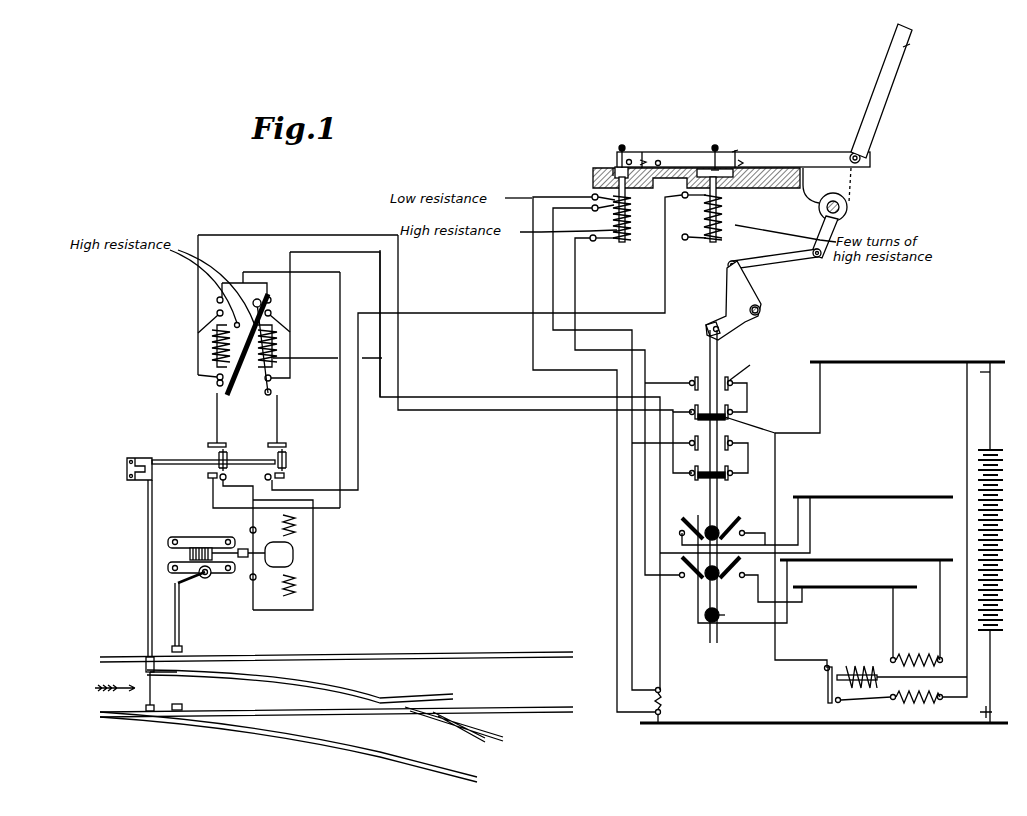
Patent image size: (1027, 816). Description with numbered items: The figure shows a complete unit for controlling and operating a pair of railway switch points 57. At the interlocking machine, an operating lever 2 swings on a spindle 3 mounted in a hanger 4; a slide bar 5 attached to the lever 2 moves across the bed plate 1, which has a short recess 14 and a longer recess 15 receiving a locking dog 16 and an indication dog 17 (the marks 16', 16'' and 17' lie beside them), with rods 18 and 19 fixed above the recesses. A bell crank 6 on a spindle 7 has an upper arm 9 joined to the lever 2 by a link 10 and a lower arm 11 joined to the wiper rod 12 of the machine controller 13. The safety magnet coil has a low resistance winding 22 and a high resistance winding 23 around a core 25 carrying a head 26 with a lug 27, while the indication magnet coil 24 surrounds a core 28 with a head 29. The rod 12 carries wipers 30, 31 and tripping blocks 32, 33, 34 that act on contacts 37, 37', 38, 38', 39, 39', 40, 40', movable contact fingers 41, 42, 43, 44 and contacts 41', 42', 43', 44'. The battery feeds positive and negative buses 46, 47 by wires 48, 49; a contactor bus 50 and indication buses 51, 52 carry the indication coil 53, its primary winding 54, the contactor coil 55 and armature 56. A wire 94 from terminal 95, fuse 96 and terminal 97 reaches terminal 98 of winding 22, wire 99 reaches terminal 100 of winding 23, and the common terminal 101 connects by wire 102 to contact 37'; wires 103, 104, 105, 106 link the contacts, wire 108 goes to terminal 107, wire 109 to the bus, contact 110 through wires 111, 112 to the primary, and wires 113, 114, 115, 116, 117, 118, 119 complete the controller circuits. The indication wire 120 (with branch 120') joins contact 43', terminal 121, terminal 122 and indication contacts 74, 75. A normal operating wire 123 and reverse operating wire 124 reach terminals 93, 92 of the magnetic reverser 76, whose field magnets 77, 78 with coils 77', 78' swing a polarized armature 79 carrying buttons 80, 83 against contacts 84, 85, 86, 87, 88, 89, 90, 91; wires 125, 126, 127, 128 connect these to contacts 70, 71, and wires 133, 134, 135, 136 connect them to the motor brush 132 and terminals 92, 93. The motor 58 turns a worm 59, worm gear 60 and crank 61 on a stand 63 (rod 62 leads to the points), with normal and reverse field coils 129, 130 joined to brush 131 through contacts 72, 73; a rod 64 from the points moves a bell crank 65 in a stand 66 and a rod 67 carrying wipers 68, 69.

The bed plate 1 is at (745, 172).
The operating lever 2 is at (886, 110).
The spindle 3 is at (848, 207).
The hanger 4 is at (806, 176).
The slide bar 5 is at (806, 150).
The bell crank 6 is at (760, 305).
The spindle 7 is at (762, 310).
The upper arm 9 is at (727, 268).
The link 10 is at (760, 266).
The lower arm 11 is at (722, 333).
The wiper rod 12 is at (709, 483).
The machine controller 13 is at (731, 634).
The short recess 14 is at (614, 170).
The long recess 15 is at (718, 168).
The locking dog 16 is at (657, 138).
The pin 16' is at (673, 144).
The pin 16'' is at (643, 144).
The indication dog 17 is at (761, 138).
The pin 17' is at (769, 146).
The rod 18 is at (622, 145).
The rod 19 is at (716, 145).
The low resistance winding 22 is at (632, 203).
The high resistance winding 23 is at (632, 224).
The indication magnet coil 24 is at (724, 203).
The core 25 is at (630, 243).
The head 26 is at (612, 172).
The lug 27 is at (618, 170).
The core 28 is at (724, 239).
The head 29 is at (710, 168).
The wiper 30 is at (760, 415).
The wiper 31 is at (745, 477).
The tripping block 32 is at (706, 527).
The tripping block 33 is at (706, 580).
The tripping block 34 is at (726, 616).
The contact 37 is at (671, 369).
The contact 37' is at (725, 369).
The contact 38 is at (683, 401).
The contact 38' is at (724, 402).
The contact 39 is at (665, 433).
The contact 39' is at (733, 433).
The contact 40 is at (684, 464).
The contact 40' is at (731, 464).
The movable contact finger 41 is at (678, 526).
The contact 41' is at (667, 542).
The movable contact finger 42 is at (763, 522).
The contact 42' is at (767, 543).
The movable contact finger 43 is at (681, 567).
The contact 43' is at (674, 586).
The movable contact finger 44 is at (741, 567).
The contact 44' is at (755, 587).
The positive bus 46 is at (985, 725).
The negative bus 47 is at (970, 361).
The wire 48 is at (992, 665).
The wire 49 is at (992, 395).
The contactor bus 50 is at (935, 496).
The indication bus 51 is at (935, 559).
The indication bus 52 is at (925, 586).
The indication coil 53 is at (912, 655).
The primary winding 54 is at (910, 703).
The contactor coil 55 is at (860, 665).
The armature 56 is at (826, 693).
The railway switch points 57 is at (334, 717).
The electric motor 58 is at (294, 554).
The worm 59 is at (201, 547).
The worm gear 60 is at (206, 579).
The crank 61 is at (180, 586).
The rod 62 is at (180, 630).
The stand 63 is at (167, 542).
The rod 64 is at (147, 595).
The bell crank 65 is at (132, 460).
The stand 66 is at (128, 480).
The rod 67 is at (175, 465).
The wiper 68 is at (218, 458).
The wiper 69 is at (288, 458).
The contact 70 is at (210, 442).
The contact 71 is at (282, 442).
The contact 72 is at (207, 476).
The contact 73 is at (285, 476).
The indication contact 74 is at (266, 480).
The indication contact 75 is at (223, 481).
The magnetic reverser 76 is at (247, 344).
The field magnet 77 is at (288, 350).
The coil 77' is at (301, 352).
The field magnet 78 is at (186, 346).
The coil 78' is at (177, 340).
The polarized armature 79 is at (247, 295).
The contact button 80 is at (262, 306).
The contact button 83 is at (217, 383).
The contact 84 is at (271, 299).
The contact 85 is at (271, 313).
The contact 86 is at (217, 299).
The contact 87 is at (217, 312).
The contact 88 is at (291, 379).
The contact 89 is at (271, 392).
The contact 90 is at (217, 376).
The contact 91 is at (222, 394).
The terminal 92 is at (278, 337).
The terminal 93 is at (212, 337).
The wire 94 is at (631, 528).
The terminal 95 is at (661, 689).
The protecting fuse 96 is at (661, 710).
The terminal 97 is at (655, 713).
The terminal 98 is at (593, 211).
The wire 99 is at (616, 557).
The terminal 100 is at (592, 241).
The common terminal 101 is at (592, 195).
The wire 102 is at (533, 338).
The wire 103 is at (750, 393).
The wire 104 is at (750, 467).
The wire 105 is at (750, 448).
The wire 106 is at (821, 397).
The terminal 107 is at (824, 668).
The wire 108 is at (776, 640).
The wire 109 is at (966, 420).
The contact 110 is at (836, 703).
The wire 111 is at (862, 700).
The wire 112 is at (943, 700).
The wire 113 is at (672, 460).
The wire 114 is at (658, 431).
The wire 115 is at (728, 520).
The wire 116 is at (788, 573).
The wire 117 is at (803, 602).
The wire 118 is at (812, 547).
The wire 119 is at (800, 524).
The indication wire 120 is at (477, 385).
The contact 120' is at (242, 538).
The terminal 121 is at (687, 240).
The terminal 122 is at (685, 198).
The normal operating wire 123 is at (457, 410).
The reverse operating wire 124 is at (457, 397).
The wire 125 is at (327, 358).
The wire 126 is at (278, 408).
The wire 127 is at (197, 374).
The wire 128 is at (216, 408).
The normal field coil 129 is at (304, 583).
The reverse field coil 130 is at (289, 555).
The brush 131 is at (250, 577).
The brush 132 is at (250, 529).
The wire 133 is at (290, 272).
The wire 134 is at (230, 282).
The wire 135 is at (291, 331).
The wire 136 is at (197, 332).